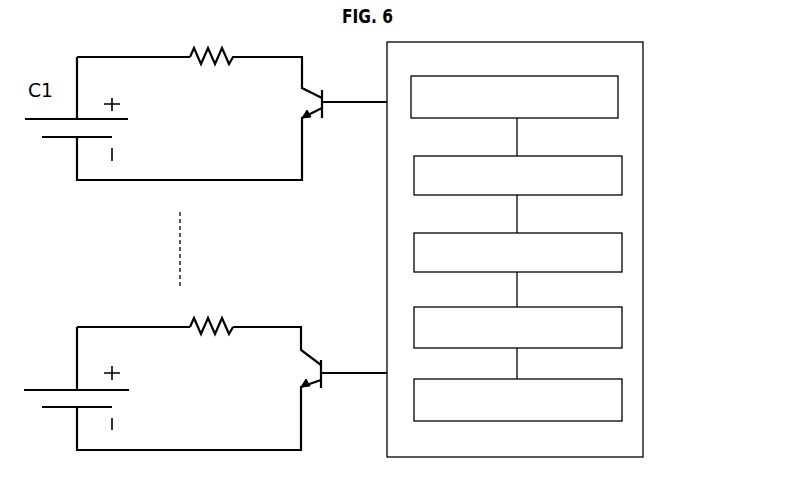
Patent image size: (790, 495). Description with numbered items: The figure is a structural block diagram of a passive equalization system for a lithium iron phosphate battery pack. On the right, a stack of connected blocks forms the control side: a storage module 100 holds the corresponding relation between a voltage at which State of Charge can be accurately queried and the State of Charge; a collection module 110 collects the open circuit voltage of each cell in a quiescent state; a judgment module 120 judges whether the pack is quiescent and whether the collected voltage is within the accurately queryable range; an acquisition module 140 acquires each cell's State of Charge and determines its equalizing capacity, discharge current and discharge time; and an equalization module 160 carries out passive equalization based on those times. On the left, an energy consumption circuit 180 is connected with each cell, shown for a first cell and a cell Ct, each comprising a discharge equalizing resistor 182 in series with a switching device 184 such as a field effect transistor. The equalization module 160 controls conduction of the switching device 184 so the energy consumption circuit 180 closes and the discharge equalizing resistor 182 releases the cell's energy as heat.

The storage module 100 is at (619, 92).
The collection module 110 is at (622, 167).
The judgment module 120 is at (622, 253).
The acquisition module 140 is at (622, 328).
The equalization module 160 is at (622, 402).
The energy consumption circuit 180 is at (240, 408).
The discharge equalizing resistor 182 is at (232, 329).
The switching device 184 is at (304, 360).